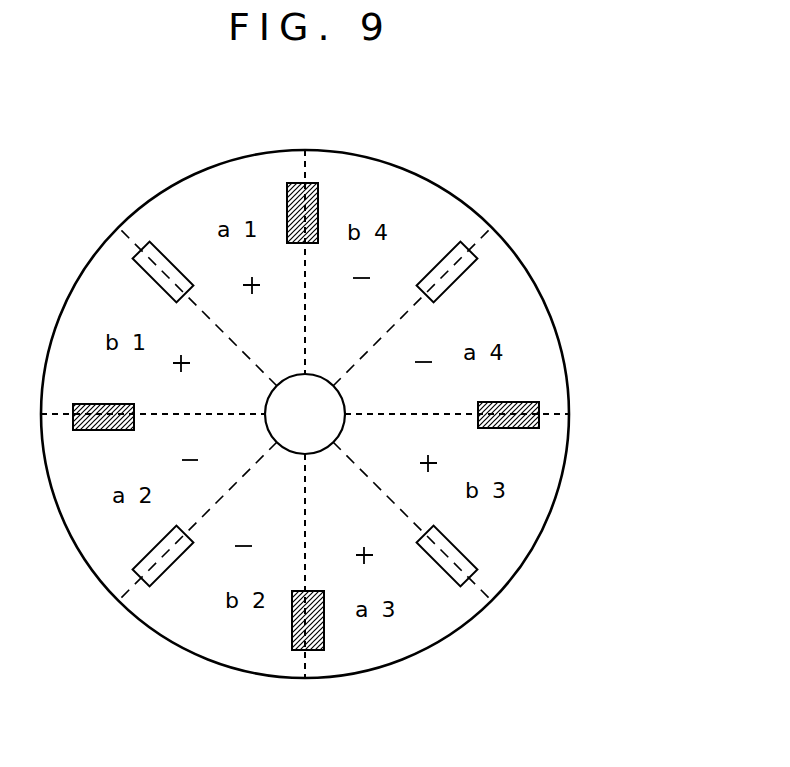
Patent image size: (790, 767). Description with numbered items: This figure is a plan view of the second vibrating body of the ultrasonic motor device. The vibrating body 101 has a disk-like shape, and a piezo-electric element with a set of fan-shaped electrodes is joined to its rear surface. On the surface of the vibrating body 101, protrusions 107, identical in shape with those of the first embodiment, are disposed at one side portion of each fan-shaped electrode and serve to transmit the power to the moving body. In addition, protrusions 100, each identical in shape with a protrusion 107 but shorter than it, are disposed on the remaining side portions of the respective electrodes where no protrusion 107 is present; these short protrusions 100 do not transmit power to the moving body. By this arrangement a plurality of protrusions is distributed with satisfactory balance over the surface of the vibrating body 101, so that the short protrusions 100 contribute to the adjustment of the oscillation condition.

The protrusion 100 is at (311, 182).
The protrusion 107 is at (455, 245).
The vibrating body 101 is at (550, 312).